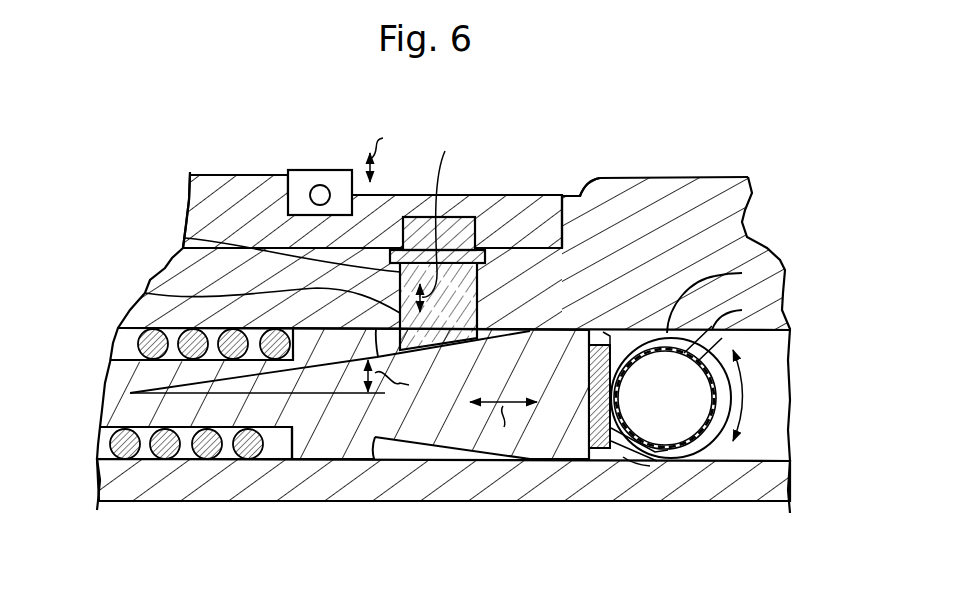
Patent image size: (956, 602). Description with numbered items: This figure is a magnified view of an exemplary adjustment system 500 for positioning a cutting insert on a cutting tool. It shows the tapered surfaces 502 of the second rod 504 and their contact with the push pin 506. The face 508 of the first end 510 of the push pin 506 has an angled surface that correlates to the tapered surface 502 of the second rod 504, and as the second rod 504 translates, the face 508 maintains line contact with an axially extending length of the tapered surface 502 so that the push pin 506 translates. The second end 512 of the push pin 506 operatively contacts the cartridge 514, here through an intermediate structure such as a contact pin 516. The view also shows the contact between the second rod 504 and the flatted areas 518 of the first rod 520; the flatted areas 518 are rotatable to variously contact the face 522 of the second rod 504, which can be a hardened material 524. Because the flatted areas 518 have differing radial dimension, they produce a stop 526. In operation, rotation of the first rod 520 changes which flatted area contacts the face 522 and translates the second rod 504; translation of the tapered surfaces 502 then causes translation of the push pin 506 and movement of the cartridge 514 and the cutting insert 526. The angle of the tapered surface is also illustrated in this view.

The adjustment system 500 is at (738, 156).
The tapered surfaces 502 is at (497, 317).
The second rod 504 is at (127, 377).
The push pin 506 is at (462, 323).
The face 508 is at (145, 293).
The first end 510 is at (458, 278).
The second end 512 is at (184, 238).
The cartridge 514 is at (212, 187).
The contact pin 516 is at (498, 207).
The flatted areas 518 is at (742, 310).
The first rod 520 is at (742, 273).
The face 522 is at (622, 462).
The hardened material 524 is at (588, 433).
The cutting insert 526 is at (302, 188).